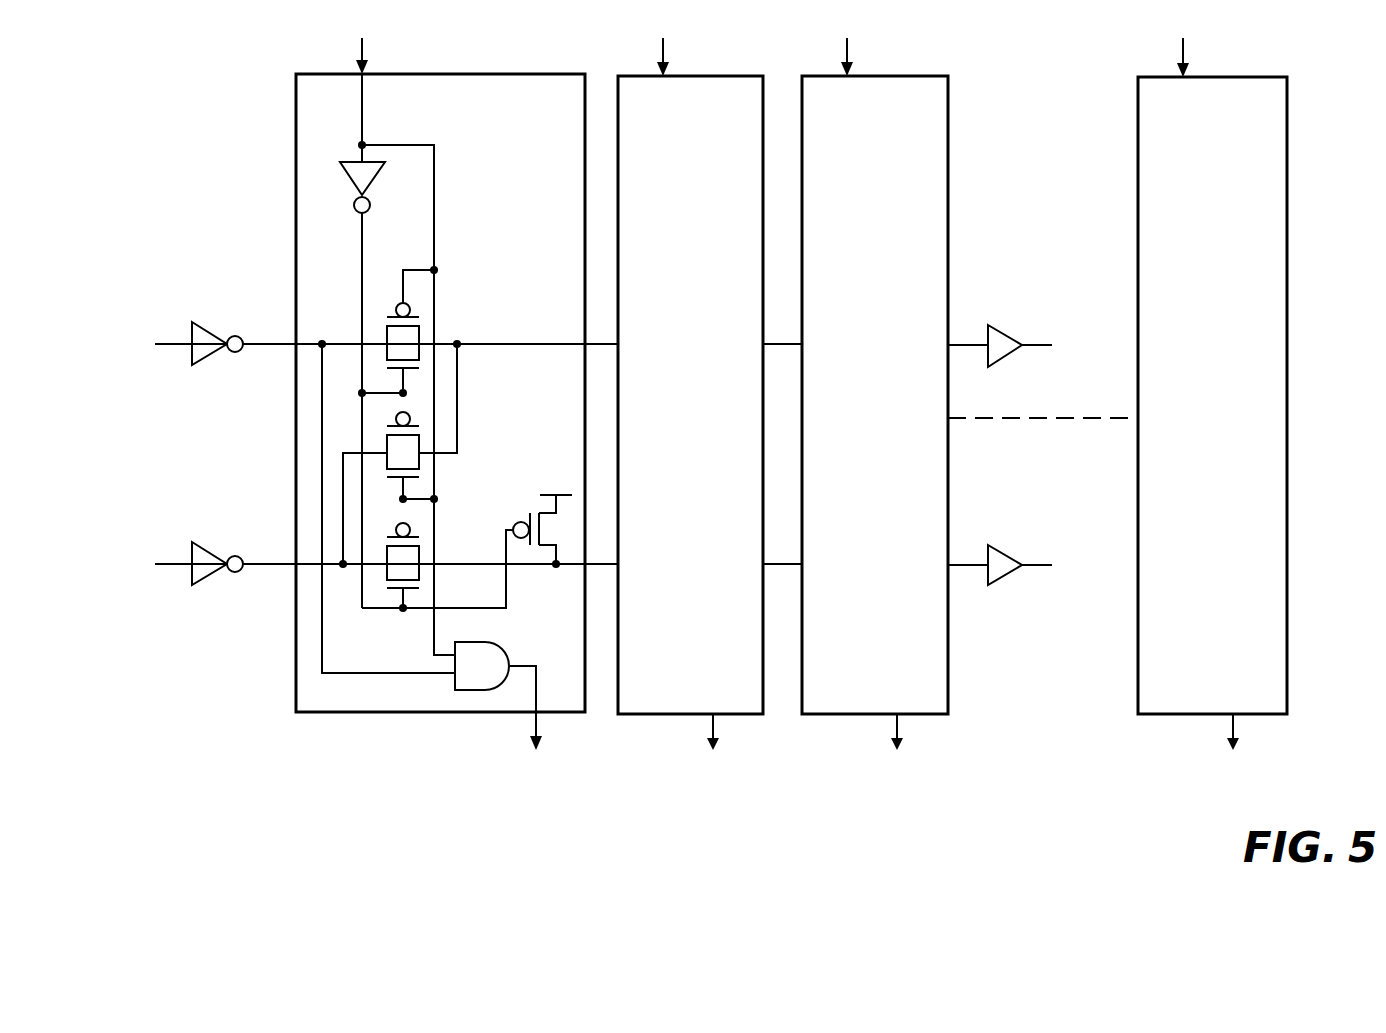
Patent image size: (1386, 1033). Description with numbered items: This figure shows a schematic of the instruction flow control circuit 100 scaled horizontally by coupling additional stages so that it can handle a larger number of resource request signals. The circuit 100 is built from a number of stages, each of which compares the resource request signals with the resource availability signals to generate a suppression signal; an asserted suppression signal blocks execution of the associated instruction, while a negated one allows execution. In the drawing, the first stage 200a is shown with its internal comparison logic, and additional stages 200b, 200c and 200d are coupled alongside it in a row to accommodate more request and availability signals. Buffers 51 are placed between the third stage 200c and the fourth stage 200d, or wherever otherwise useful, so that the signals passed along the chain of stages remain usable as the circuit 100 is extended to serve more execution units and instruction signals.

The instruction flow control circuit 100 is at (283, 158).
The stage 200a is at (433, 47).
The stage 200b is at (718, 76).
The stage 200c is at (903, 76).
The stage 200d is at (1240, 77).
The buffer 51 is at (1012, 352).